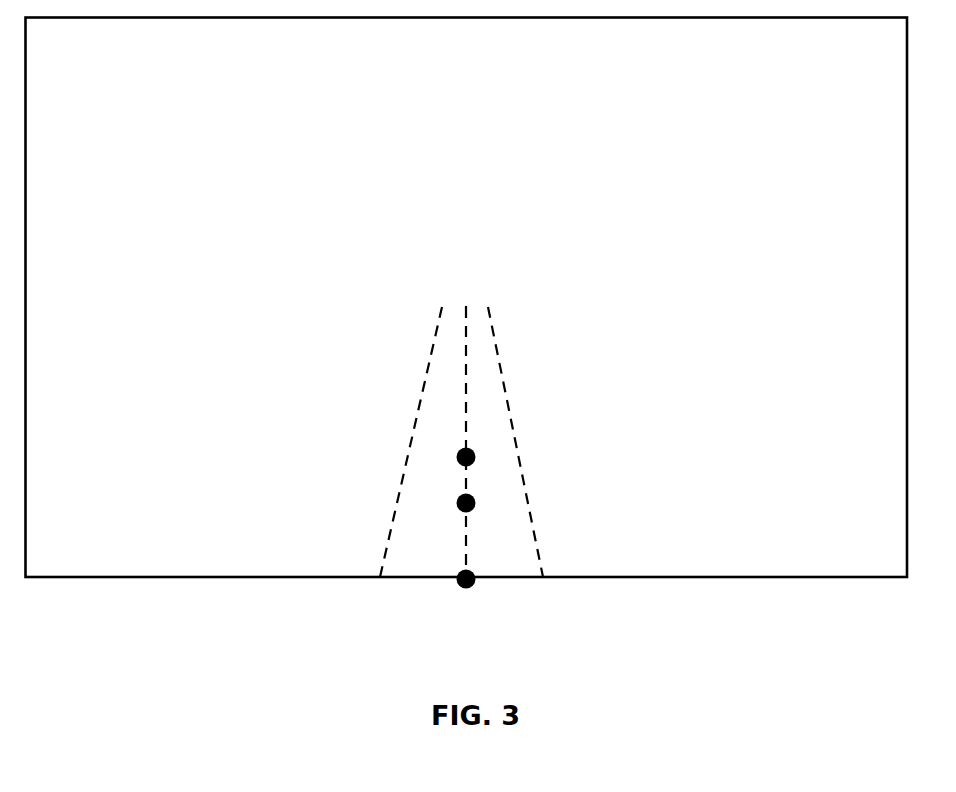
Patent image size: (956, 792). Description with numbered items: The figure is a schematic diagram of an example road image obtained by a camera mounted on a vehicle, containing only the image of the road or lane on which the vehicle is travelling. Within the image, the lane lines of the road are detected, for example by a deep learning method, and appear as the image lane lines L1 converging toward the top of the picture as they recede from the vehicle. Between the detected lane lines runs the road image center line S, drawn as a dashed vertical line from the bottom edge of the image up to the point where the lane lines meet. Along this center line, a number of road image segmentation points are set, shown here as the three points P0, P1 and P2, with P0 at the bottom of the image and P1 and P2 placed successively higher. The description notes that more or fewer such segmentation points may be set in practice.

The road image center line S is at (467, 296).
The first image lane line L1 is at (463, 442).
The road image segmentation point P2 is at (479, 445).
The road image segmentation point P1 is at (479, 494).
The road image segmentation point P0 is at (478, 568).